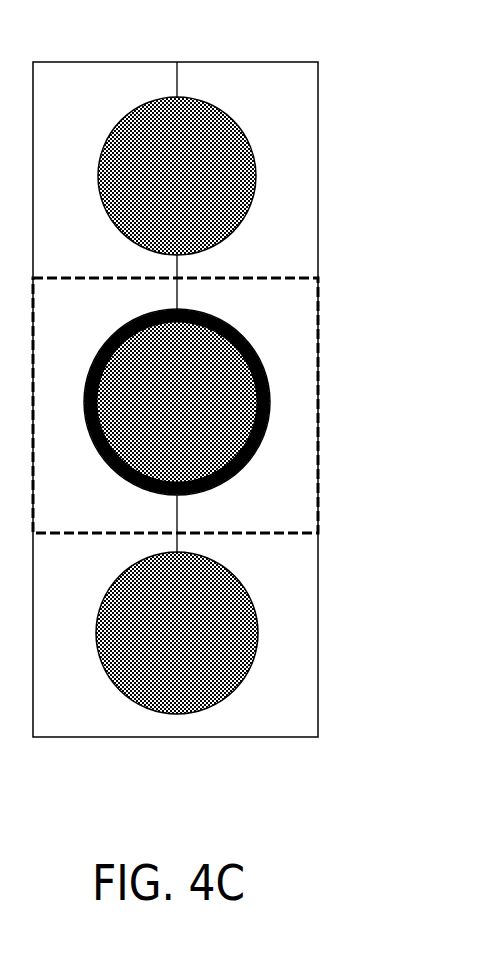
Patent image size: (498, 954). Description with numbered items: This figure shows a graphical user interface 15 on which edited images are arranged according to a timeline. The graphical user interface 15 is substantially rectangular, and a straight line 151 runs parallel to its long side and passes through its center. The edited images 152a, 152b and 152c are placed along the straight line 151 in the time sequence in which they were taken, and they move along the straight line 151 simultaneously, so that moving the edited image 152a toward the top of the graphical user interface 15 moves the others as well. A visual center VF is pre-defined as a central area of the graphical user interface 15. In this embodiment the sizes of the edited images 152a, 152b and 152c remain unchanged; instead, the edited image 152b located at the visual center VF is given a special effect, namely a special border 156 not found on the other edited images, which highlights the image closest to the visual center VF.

The graphical user interface 15 is at (236, 62).
The straight line 151 is at (180, 295).
The edited image 152a is at (258, 163).
The edited image 152b is at (263, 378).
The edited image 152c is at (258, 645).
The special border 156 is at (220, 320).
The visual center VF is at (319, 445).